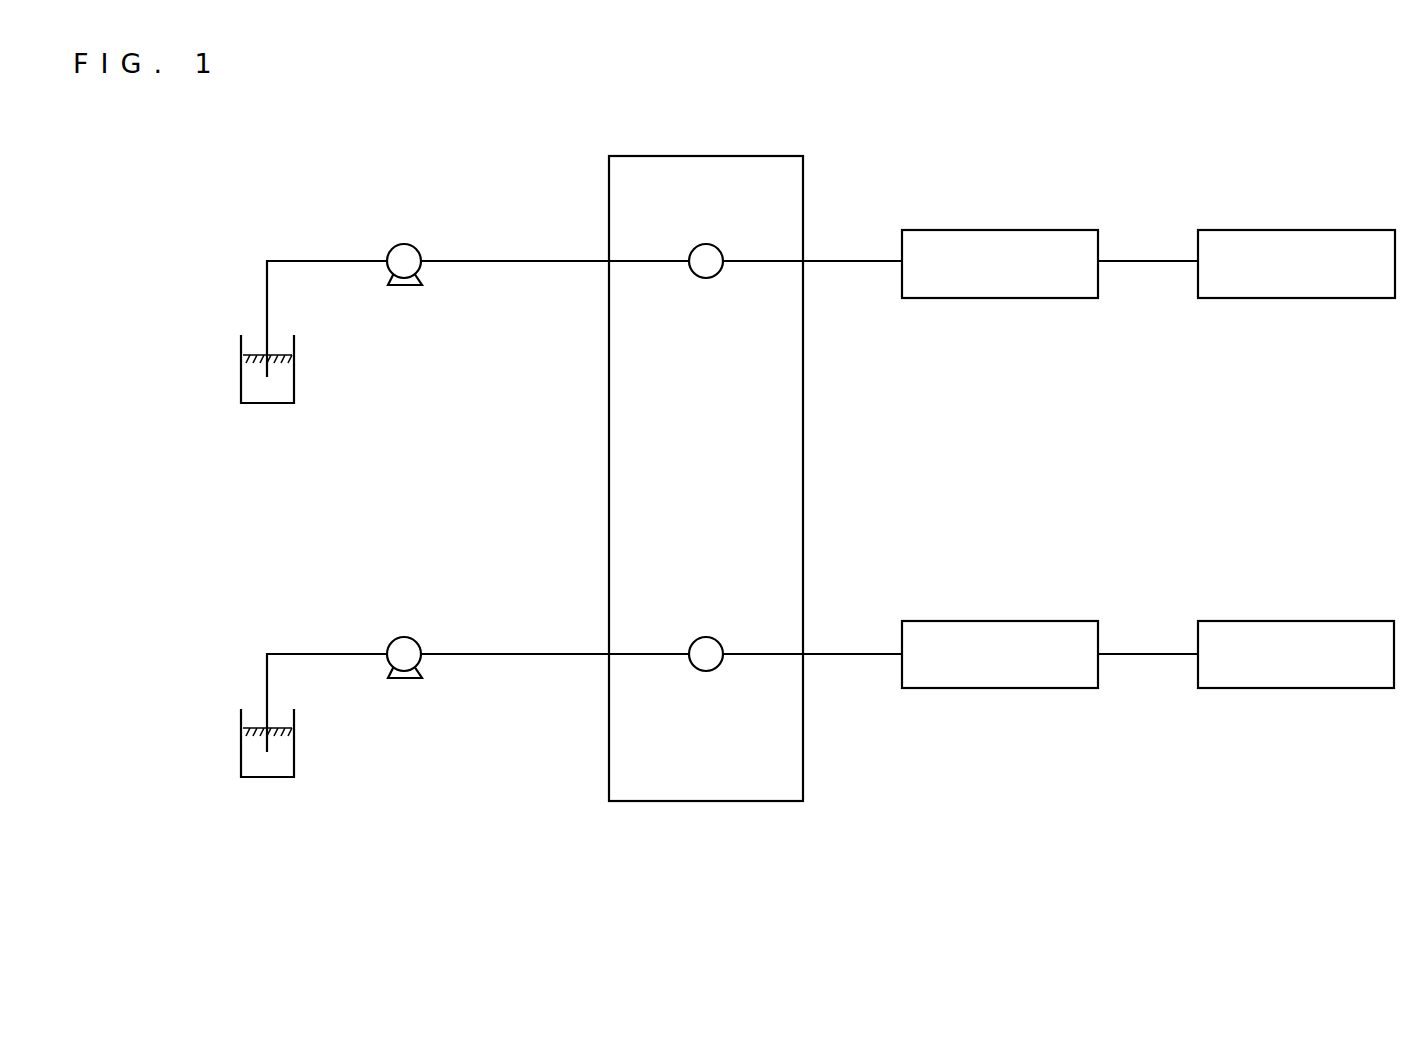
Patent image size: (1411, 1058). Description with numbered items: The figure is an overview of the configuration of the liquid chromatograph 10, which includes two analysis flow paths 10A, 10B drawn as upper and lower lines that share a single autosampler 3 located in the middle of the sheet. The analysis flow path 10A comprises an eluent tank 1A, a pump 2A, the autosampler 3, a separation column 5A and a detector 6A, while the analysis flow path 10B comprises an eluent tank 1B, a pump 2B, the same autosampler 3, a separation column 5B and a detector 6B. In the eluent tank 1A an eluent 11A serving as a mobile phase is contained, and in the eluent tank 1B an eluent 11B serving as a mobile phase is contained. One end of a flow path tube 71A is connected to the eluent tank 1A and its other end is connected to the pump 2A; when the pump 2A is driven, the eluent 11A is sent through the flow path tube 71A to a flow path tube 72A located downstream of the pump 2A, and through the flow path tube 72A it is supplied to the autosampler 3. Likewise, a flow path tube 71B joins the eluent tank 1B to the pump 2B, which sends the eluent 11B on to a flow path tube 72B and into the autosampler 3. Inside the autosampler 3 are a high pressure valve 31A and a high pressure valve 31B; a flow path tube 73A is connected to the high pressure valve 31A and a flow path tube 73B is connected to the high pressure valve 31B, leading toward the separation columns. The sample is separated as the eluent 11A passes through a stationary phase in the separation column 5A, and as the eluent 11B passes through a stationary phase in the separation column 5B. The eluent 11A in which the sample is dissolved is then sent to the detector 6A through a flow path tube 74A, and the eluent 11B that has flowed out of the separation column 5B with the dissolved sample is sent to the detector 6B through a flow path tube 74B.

The liquid chromatograph 10 is at (458, 832).
The analysis flow path 10A is at (1142, 195).
The analysis flow path 10B is at (1137, 782).
The eluent tank 1A is at (295, 382).
The eluent tank 1B is at (295, 757).
The eluent 11A is at (257, 390).
The eluent 11B is at (257, 760).
The pump 2A is at (403, 243).
The pump 2B is at (404, 635).
The autosampler 3 is at (682, 155).
The high pressure valve 31A is at (705, 245).
The high pressure valve 31B is at (707, 636).
The separation column 5A is at (1018, 229).
The separation column 5B is at (1025, 620).
The detector 6A is at (1325, 229).
The detector 6B is at (1327, 620).
The flow path tube 71A is at (335, 263).
The flow path tube 71B is at (347, 657).
The flow path tube 72A is at (540, 262).
The flow path tube 72B is at (528, 656).
The flow path tube 73A is at (862, 259).
The flow path tube 73B is at (847, 656).
The flow path tube 74A is at (1155, 260).
The flow path tube 74B is at (1145, 657).